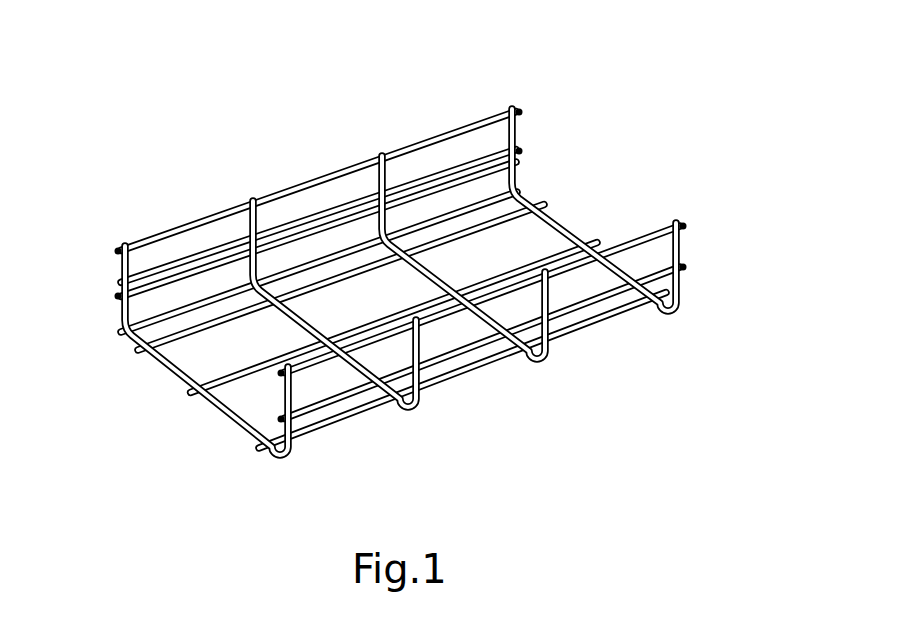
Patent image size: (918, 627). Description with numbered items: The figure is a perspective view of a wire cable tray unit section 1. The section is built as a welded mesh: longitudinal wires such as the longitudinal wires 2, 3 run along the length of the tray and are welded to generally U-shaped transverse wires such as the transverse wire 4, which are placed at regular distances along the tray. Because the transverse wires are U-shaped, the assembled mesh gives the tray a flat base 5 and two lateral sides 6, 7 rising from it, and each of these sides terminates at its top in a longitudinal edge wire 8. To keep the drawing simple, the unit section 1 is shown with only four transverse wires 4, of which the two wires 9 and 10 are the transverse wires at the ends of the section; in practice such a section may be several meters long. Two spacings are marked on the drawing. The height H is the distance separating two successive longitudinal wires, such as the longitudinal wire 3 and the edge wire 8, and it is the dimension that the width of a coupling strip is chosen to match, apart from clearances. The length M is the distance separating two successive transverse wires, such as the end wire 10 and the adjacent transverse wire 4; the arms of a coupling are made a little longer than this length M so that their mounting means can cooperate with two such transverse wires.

The wire cable tray unit section 1 is at (374, 272).
The longitudinal wire 2 is at (253, 380).
The longitudinal wire 3 is at (160, 285).
The transverse wire 4 is at (258, 267).
The flat base 5 is at (266, 409).
The lateral side 6 is at (466, 146).
The lateral side 7 is at (654, 258).
The longitudinal edge wire 8 is at (405, 136).
The end transverse wire 9 is at (516, 188).
The end transverse wire 10 is at (167, 376).
The length separating two successive transverse wires M is at (249, 234).
The height separating two successive longitudinal wires H is at (191, 292).